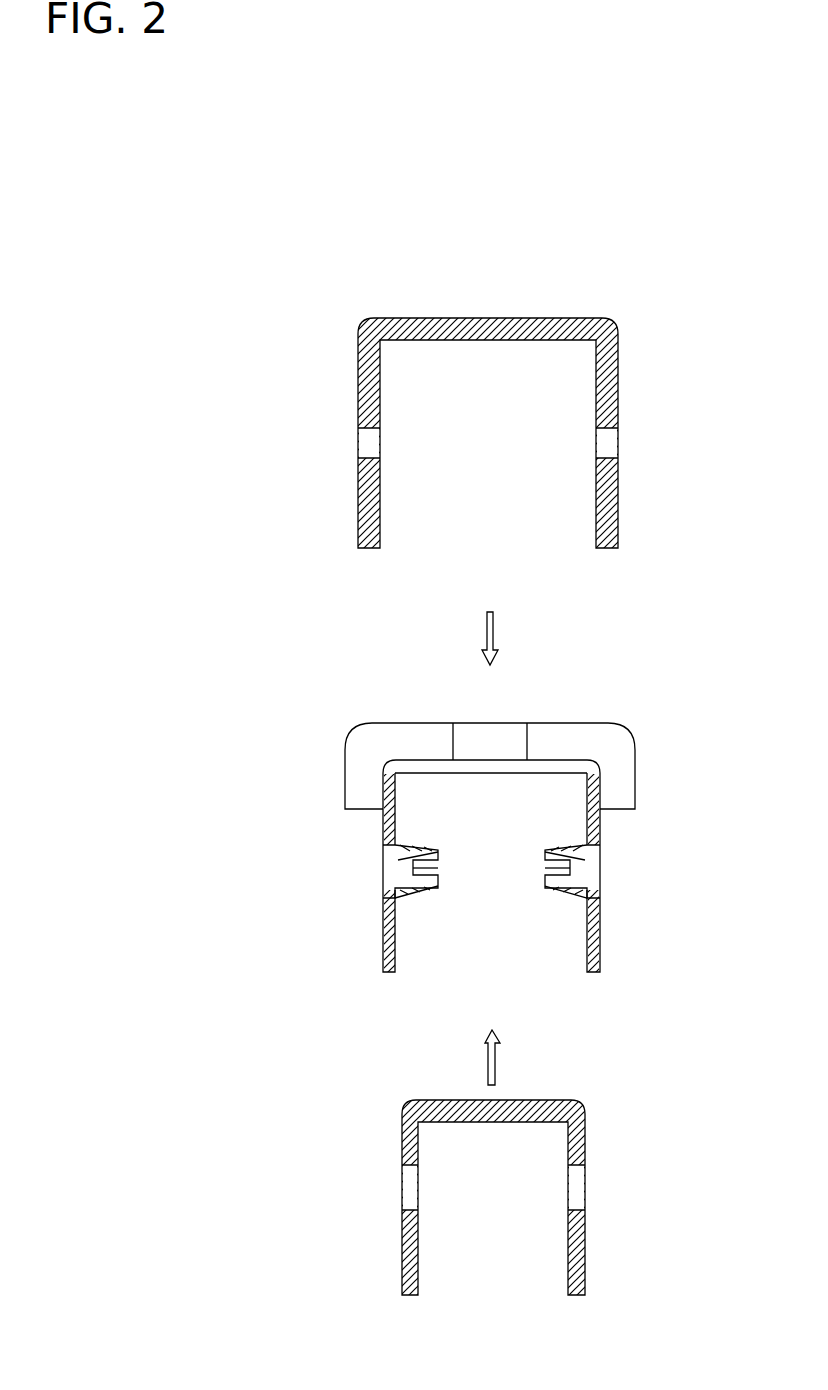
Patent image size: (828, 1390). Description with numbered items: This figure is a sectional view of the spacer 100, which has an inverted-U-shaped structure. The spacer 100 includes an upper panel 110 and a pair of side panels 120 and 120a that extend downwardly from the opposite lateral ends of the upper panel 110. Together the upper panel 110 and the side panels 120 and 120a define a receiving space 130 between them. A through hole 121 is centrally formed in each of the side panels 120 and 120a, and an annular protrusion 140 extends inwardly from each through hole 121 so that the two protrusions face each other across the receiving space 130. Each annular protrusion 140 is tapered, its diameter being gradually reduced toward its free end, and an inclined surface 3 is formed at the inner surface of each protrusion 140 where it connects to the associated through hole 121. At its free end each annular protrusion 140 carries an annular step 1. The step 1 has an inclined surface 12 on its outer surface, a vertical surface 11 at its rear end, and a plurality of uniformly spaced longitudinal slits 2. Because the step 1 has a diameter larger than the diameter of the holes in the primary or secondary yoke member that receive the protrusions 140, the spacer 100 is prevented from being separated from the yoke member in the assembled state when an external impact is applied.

The spacer 100 is at (312, 723).
The upper panel 110 is at (558, 763).
The side panel 120 is at (385, 963).
The side panel 120a is at (595, 958).
The receiving space 130 is at (507, 958).
The through hole 121 is at (393, 872).
The annular protrusion 140 is at (580, 850).
The annular step 1 is at (562, 888).
The longitudinal slit 2 is at (595, 880).
The inclined surface 3 is at (392, 851).
The vertical surface 11 is at (390, 890).
The inclined surface 12 is at (427, 888).